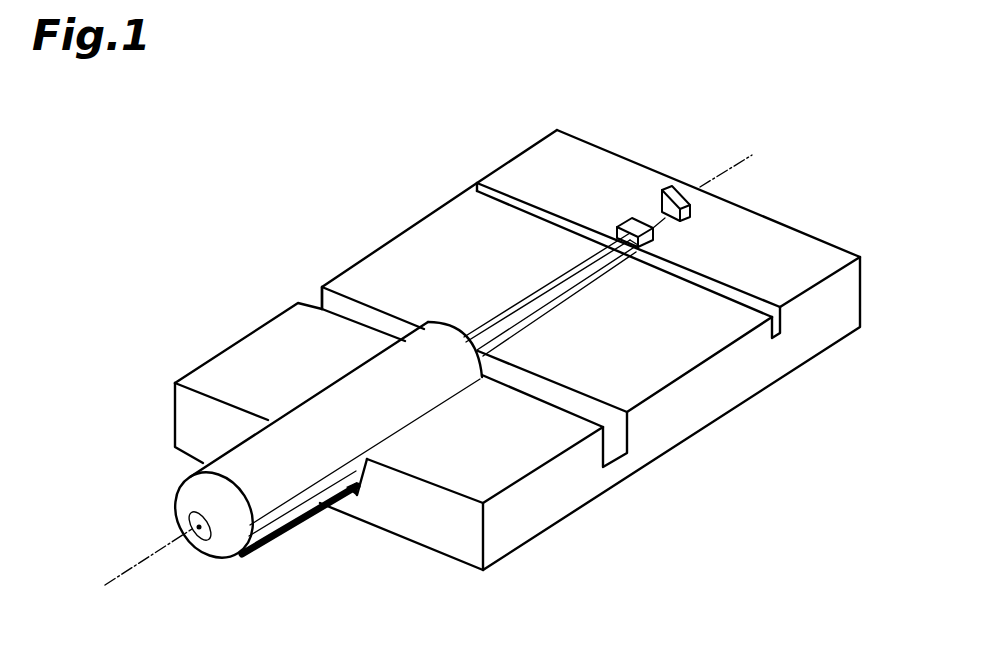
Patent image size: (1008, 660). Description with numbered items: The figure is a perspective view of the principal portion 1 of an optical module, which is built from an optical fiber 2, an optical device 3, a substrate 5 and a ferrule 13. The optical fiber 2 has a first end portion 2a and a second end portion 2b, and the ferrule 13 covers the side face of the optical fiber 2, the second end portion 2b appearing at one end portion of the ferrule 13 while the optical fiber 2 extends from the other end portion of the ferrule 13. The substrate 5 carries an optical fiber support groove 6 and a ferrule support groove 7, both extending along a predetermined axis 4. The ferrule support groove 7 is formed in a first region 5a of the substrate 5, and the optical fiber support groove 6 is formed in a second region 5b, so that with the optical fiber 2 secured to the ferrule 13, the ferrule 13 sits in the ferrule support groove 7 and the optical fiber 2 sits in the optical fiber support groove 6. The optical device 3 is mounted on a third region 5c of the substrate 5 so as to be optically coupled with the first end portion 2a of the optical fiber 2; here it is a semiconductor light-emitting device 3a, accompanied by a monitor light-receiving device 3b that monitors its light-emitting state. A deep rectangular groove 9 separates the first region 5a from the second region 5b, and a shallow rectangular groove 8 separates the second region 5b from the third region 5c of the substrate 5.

The optical module principal portion 1 is at (350, 160).
The optical fiber 2 is at (533, 307).
The first end portion 2a is at (640, 252).
The second end portion 2b is at (200, 530).
The optical device 3 is at (720, 75).
The semiconductor light-emitting device 3a is at (632, 218).
The monitor light-receiving device 3b is at (672, 186).
The predetermined axis 4 is at (122, 590).
The substrate 5 is at (553, 515).
The first region 5a is at (294, 289).
The second region 5b is at (466, 176).
The third region 5c is at (540, 119).
The optical fiber support groove 6 is at (603, 271).
The ferrule support groove 7 is at (358, 483).
The shallow rectangular groove 8 is at (778, 333).
The deep rectangular groove 9 is at (322, 298).
The ferrule 13 is at (297, 522).